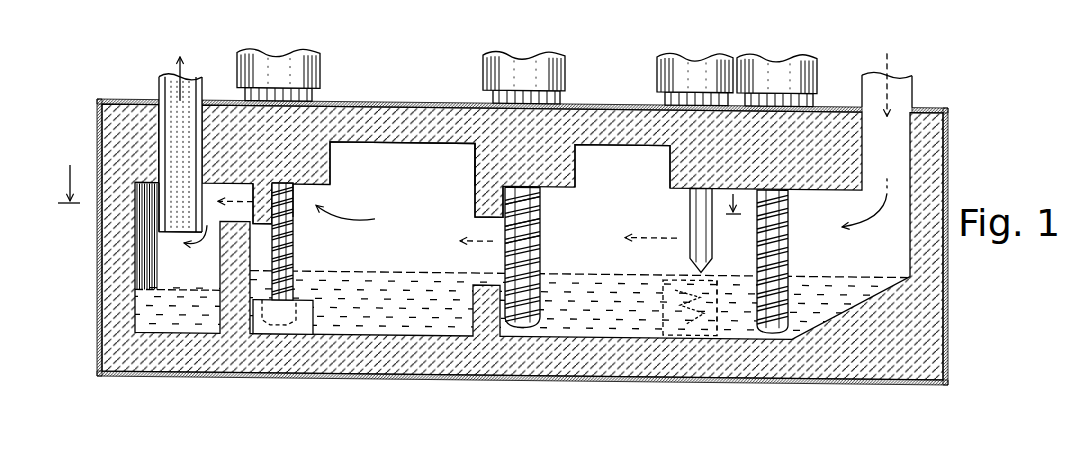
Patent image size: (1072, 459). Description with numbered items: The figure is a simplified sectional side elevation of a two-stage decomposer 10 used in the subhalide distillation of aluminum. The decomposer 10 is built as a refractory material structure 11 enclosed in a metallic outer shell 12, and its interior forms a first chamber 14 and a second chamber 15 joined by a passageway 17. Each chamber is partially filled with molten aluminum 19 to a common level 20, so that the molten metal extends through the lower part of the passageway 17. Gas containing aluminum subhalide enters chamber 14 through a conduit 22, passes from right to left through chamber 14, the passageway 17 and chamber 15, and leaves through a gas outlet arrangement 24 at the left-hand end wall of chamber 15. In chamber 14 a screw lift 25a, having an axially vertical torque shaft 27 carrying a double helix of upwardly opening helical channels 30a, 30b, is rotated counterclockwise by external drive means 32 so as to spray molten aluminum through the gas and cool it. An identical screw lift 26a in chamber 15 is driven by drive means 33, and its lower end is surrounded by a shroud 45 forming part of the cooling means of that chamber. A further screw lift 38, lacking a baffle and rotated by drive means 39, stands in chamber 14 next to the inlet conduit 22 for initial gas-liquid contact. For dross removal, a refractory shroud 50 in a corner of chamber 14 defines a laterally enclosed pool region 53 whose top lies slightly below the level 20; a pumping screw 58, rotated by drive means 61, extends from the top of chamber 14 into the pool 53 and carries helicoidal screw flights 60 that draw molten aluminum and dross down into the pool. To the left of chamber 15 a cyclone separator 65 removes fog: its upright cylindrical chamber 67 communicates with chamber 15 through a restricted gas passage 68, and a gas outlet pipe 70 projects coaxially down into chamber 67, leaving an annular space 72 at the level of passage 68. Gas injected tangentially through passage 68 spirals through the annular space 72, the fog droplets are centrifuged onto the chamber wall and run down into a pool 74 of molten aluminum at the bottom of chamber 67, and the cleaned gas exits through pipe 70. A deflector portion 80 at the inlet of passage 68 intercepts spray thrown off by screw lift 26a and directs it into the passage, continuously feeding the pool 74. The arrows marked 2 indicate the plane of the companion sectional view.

The section line 2- 2 is at (401, 190).
The decomposer 10 is at (426, 84).
The refractory material structure 11 is at (265, 365).
The metallic outer shell 12 is at (600, 384).
The first chamber 14 is at (636, 179).
The second chamber 15 is at (412, 176).
The passageway 17 is at (475, 227).
The molten aluminum 19 is at (412, 333).
The level 20 is at (417, 270).
The conduit 22 is at (912, 82).
The gas outlet arrangement 24 is at (173, 117).
The screw lift 25a is at (540, 252).
The screw lift 26a is at (290, 248).
The torque shaft 27 is at (540, 205).
The helical channel 30a is at (540, 223).
The helical channel 30b is at (540, 239).
The drive means 32 is at (553, 70).
The drive means 33 is at (310, 62).
The screw lift 38 is at (788, 229).
The drive means 39 is at (803, 45).
The shroud 45 is at (313, 313).
The shroud 50 is at (665, 322).
The pool region 53 is at (718, 316).
The pumping screw 58 is at (690, 215).
The helicoidal screw flights 60 is at (680, 300).
The drive means 61 is at (668, 52).
The cyclone separator 65 is at (147, 258).
The cylindrical chamber 67 is at (140, 277).
The gas passage 68 is at (293, 215).
The gas outlet pipe 70 is at (157, 213).
The annular space 72 is at (140, 185).
The pool 74 is at (140, 313).
The deflector portion 80 is at (265, 192).